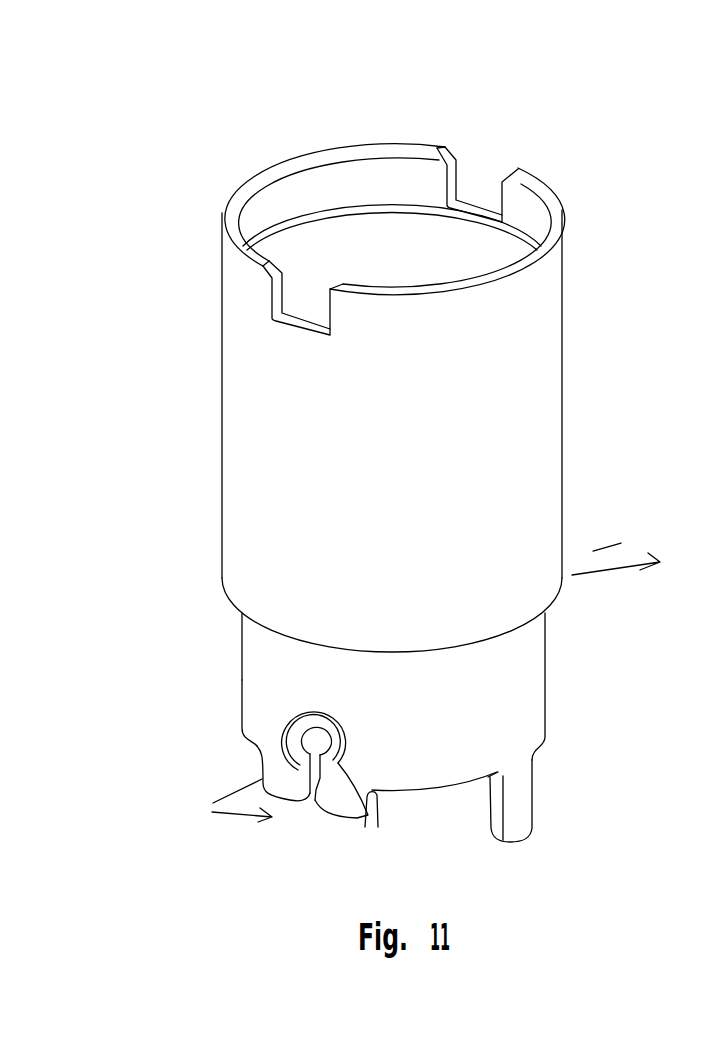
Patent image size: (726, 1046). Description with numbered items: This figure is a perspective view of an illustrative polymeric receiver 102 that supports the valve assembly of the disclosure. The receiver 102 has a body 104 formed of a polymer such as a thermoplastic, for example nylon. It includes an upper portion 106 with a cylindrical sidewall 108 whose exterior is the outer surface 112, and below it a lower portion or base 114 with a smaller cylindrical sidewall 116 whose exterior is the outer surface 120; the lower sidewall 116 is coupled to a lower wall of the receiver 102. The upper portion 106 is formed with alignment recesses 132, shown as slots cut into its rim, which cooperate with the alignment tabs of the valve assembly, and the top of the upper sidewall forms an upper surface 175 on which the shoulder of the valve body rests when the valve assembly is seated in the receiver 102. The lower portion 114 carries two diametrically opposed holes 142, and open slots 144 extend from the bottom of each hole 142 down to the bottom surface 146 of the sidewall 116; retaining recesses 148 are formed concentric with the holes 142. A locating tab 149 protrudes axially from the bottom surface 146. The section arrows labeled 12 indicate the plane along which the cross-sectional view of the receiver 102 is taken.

The receiver 102 is at (196, 161).
The body 104 is at (540, 442).
The upper portion 106 is at (538, 329).
The cylindrical sidewall 108 is at (251, 489).
The outer surface 112 is at (243, 408).
The lower portion or base 114 is at (513, 687).
The cylindrical sidewall 116 is at (263, 695).
The outer surface 120 is at (258, 668).
The alignment recesses 132 is at (479, 183).
The holes 142 is at (302, 733).
The open slots 144 is at (312, 790).
The bottom surface 146 is at (457, 782).
The retaining recesses 148 is at (367, 817).
The locating tab 149 is at (520, 802).
The upper surface 175 is at (323, 147).
The section line 12 is at (448, 693).